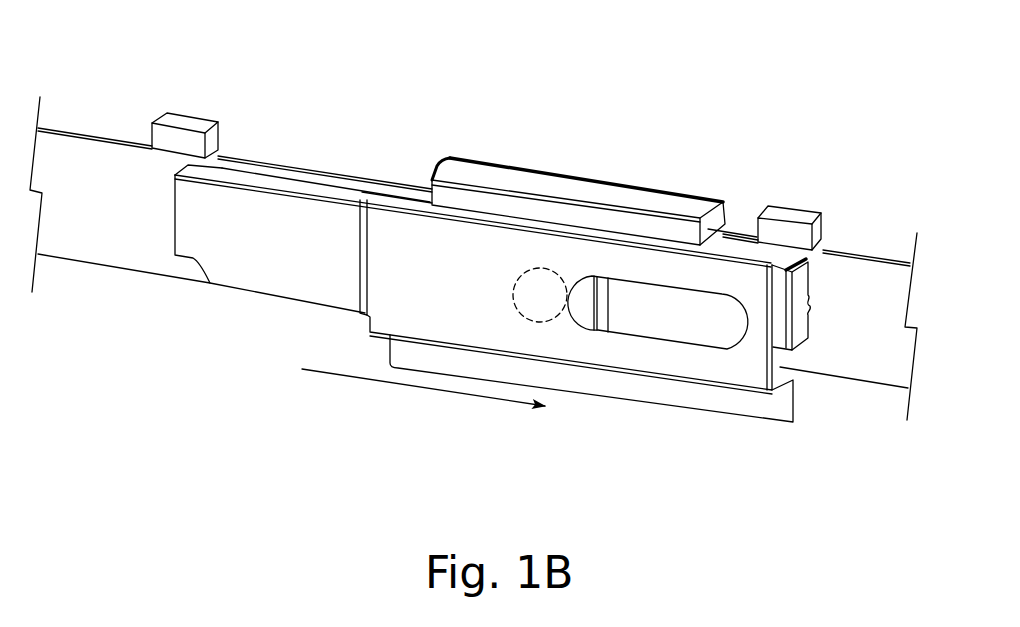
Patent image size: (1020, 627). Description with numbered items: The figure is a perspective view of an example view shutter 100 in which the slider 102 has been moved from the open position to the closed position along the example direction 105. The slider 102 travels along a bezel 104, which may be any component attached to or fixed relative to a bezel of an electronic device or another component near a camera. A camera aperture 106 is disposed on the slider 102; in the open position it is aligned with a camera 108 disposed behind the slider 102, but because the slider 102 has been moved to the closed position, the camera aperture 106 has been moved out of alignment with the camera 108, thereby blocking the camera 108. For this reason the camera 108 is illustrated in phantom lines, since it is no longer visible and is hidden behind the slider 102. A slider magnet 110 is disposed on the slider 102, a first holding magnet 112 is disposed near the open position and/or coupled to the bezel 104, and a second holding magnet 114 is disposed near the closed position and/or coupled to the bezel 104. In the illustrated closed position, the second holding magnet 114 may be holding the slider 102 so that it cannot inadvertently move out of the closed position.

The view shutter 100 is at (158, 63).
The slider 102 is at (397, 283).
The bezel 104 is at (150, 237).
The example direction 105 is at (440, 390).
The camera aperture 106 is at (663, 338).
The camera 108 is at (522, 296).
The slider magnet 110 is at (507, 178).
The first holding magnet 112 is at (200, 122).
The second holding magnet 114 is at (783, 217).